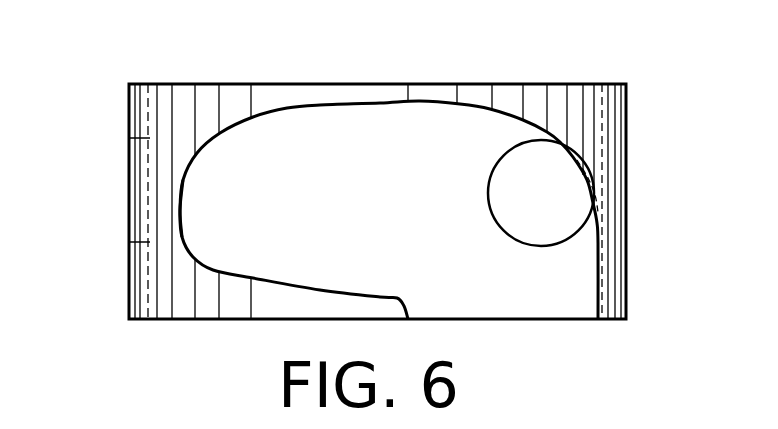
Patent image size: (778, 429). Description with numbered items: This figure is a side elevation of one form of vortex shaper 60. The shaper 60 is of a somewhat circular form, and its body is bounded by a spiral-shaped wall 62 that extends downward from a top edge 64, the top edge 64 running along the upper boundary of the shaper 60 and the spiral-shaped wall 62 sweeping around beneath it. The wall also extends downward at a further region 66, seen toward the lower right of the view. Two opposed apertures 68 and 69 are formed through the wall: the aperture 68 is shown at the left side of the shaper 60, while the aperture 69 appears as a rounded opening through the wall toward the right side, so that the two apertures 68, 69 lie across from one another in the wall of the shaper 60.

The shaper 60 is at (643, 113).
The spiral-shaped wall 62 is at (302, 303).
The top edge 64 is at (400, 84).
The wall extension 66 is at (541, 310).
The aperture 68 is at (147, 142).
The aperture 69 is at (546, 167).